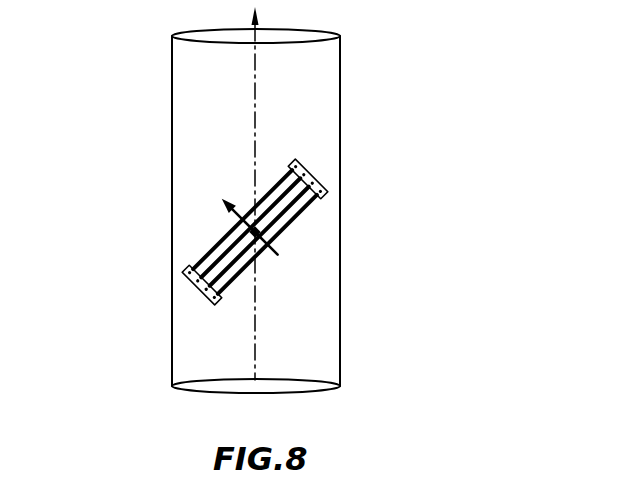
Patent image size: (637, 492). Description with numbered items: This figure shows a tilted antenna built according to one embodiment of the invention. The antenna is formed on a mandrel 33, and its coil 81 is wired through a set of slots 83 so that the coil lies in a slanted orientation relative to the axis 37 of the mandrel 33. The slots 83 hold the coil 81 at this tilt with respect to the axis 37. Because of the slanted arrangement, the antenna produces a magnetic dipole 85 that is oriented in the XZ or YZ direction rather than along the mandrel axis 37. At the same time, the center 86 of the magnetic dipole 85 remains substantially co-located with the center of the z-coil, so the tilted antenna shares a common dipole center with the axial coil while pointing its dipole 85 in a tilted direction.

The mandrel 33 is at (197, 97).
The axis 37 is at (256, 95).
The coil 81 is at (297, 222).
The slots 83 is at (327, 187).
The magnetic dipole 85 is at (224, 210).
The center of the magnetic dipole 86 is at (242, 232).